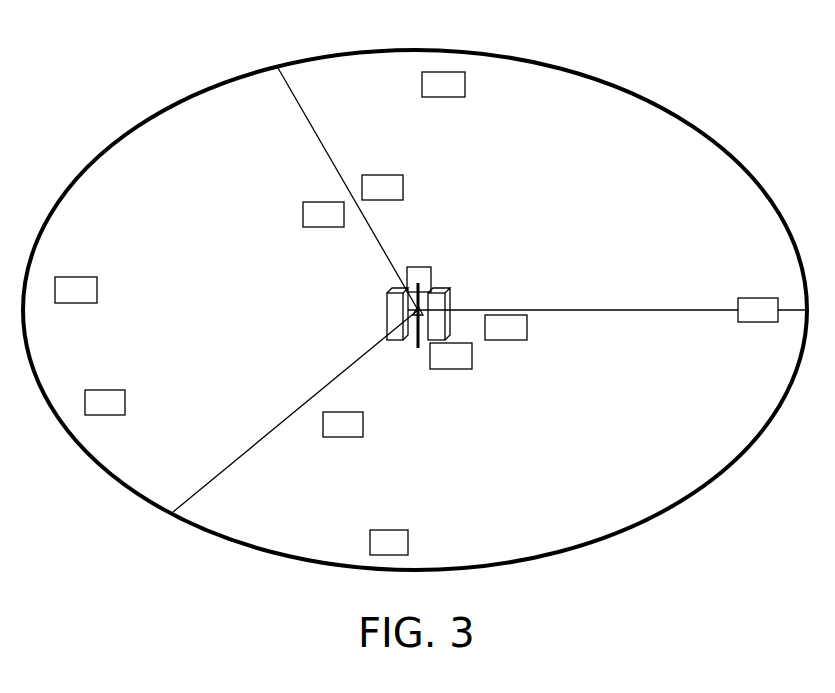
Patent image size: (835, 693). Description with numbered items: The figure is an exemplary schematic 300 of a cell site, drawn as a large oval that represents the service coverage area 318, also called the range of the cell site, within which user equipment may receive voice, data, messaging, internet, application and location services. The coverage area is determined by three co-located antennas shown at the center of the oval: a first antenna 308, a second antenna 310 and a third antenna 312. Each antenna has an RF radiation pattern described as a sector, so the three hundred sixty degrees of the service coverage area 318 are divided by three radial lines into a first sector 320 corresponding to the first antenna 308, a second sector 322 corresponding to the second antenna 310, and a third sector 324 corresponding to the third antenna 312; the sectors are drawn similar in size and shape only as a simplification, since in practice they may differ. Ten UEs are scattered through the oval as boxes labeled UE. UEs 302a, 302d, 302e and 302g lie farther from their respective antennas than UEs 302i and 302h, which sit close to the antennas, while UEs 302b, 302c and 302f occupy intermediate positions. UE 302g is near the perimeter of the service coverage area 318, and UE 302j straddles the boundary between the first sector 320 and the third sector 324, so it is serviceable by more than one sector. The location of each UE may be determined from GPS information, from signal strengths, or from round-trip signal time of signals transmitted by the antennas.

The exemplary schematic 300 is at (108, 130).
The service coverage area 318 is at (388, 50).
The first sector 320 is at (607, 270).
The second sector 322 is at (295, 290).
The third sector 324 is at (576, 423).
The first antenna 308 is at (418, 267).
The second antenna 310 is at (387, 310).
The third antenna 312 is at (447, 299).
The UE 302a is at (422, 85).
The UE 302b is at (403, 188).
The UE 302c is at (303, 214).
The UE 302d is at (97, 291).
The UE 302e is at (125, 403).
The UE 302f is at (363, 425).
The UE 302g is at (370, 543).
The UE 302h is at (472, 357).
The UE 302i is at (527, 328).
The UE 302j is at (752, 298).